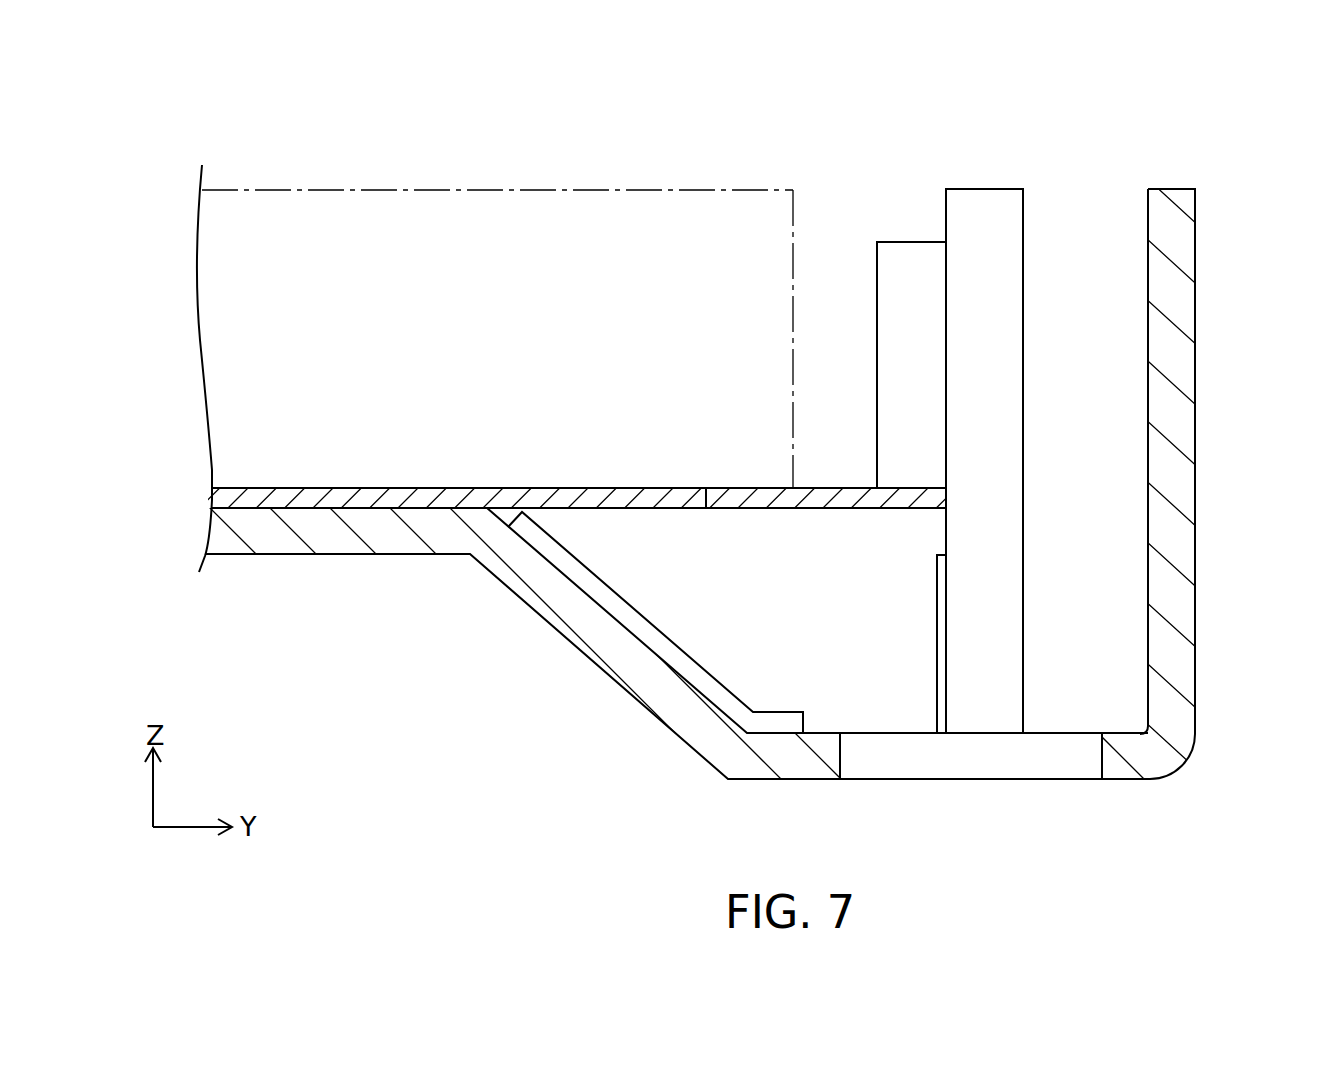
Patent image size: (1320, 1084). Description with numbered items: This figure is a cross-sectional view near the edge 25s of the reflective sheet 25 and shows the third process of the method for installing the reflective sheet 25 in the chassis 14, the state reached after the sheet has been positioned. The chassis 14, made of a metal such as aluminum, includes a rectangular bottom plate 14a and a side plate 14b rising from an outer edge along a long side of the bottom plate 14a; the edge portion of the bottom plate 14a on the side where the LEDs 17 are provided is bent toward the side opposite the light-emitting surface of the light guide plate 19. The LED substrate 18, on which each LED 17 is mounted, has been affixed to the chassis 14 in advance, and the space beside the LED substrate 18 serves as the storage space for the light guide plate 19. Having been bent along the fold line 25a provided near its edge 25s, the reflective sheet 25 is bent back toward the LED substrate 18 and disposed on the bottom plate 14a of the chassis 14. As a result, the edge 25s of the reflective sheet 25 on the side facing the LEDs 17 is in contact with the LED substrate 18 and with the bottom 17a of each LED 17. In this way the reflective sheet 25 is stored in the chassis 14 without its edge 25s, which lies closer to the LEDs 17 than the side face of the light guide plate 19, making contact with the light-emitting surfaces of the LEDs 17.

The chassis 14 is at (650, 623).
The bottom plate 14a is at (395, 538).
The side plate 14b is at (1180, 490).
The LED 17 is at (909, 242).
The bottom of LED 17a is at (908, 488).
The LED substrate 18 is at (988, 189).
The light guide plate 19 is at (387, 268).
The reflective sheet 25 is at (308, 497).
The fold line 25a is at (700, 502).
The edge of reflective sheet 25s is at (948, 493).